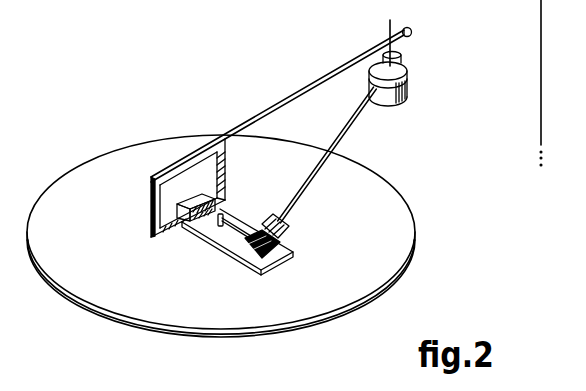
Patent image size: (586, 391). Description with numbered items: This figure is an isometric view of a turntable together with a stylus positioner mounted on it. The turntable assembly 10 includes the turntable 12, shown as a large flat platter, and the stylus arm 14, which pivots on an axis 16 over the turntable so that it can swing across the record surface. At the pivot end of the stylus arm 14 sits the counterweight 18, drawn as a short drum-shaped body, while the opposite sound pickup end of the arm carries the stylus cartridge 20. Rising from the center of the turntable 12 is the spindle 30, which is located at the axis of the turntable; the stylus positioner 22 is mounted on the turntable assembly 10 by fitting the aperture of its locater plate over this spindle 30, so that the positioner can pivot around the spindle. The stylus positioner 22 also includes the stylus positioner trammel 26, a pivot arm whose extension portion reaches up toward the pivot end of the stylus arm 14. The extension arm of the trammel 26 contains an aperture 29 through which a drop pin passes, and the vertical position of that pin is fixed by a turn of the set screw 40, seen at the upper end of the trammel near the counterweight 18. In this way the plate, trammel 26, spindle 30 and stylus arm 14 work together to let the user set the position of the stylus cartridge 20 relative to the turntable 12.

The turntable assembly 10 is at (404, 280).
The turntable 12 is at (383, 290).
The stylus arm 14 is at (341, 146).
The axis 16 is at (407, 85).
The counterweight 18 is at (404, 58).
The stylus cartridge 20 is at (289, 238).
The stylus positioner 22 is at (223, 248).
The stylus positioner trammel 26 is at (309, 86).
The aperture 29 is at (389, 31).
The spindle 30 is at (226, 221).
The set screw 40 is at (411, 29).